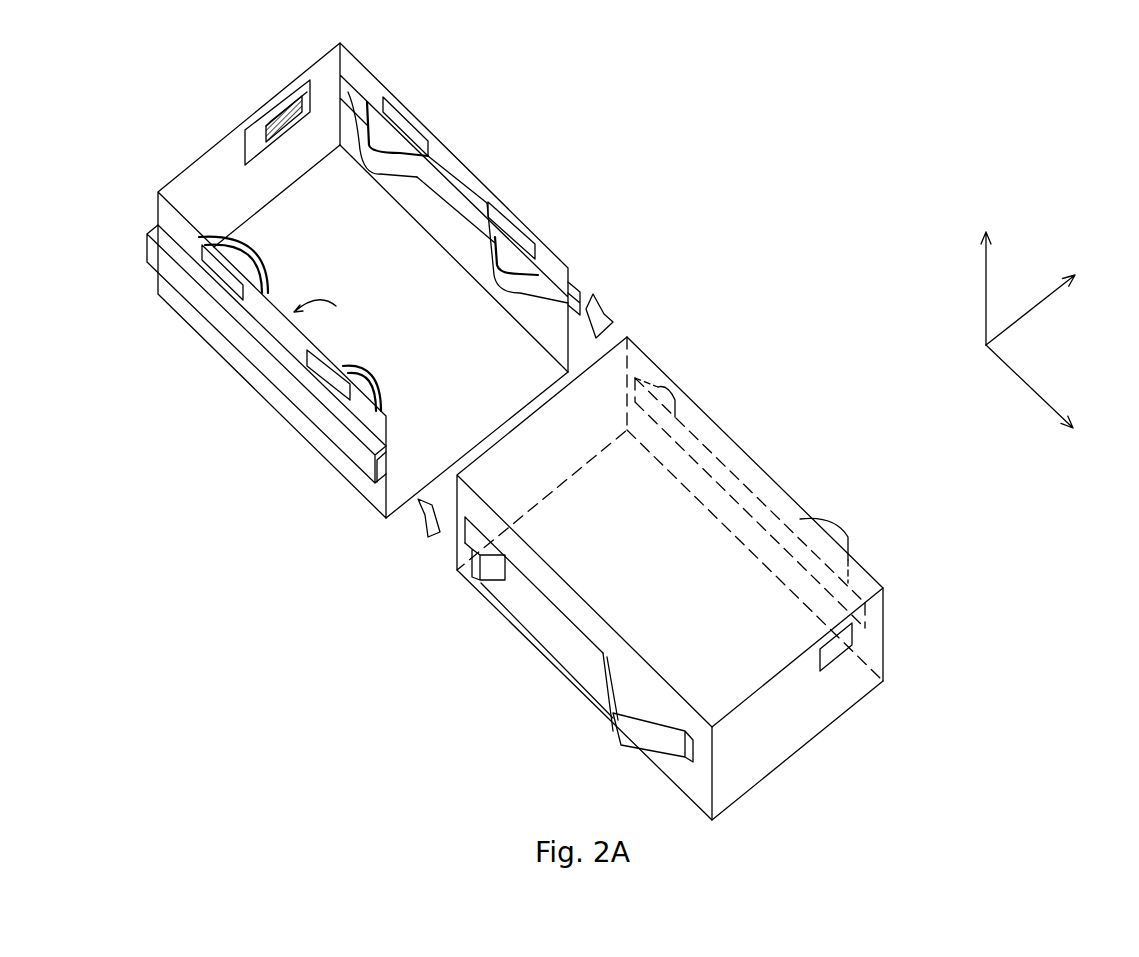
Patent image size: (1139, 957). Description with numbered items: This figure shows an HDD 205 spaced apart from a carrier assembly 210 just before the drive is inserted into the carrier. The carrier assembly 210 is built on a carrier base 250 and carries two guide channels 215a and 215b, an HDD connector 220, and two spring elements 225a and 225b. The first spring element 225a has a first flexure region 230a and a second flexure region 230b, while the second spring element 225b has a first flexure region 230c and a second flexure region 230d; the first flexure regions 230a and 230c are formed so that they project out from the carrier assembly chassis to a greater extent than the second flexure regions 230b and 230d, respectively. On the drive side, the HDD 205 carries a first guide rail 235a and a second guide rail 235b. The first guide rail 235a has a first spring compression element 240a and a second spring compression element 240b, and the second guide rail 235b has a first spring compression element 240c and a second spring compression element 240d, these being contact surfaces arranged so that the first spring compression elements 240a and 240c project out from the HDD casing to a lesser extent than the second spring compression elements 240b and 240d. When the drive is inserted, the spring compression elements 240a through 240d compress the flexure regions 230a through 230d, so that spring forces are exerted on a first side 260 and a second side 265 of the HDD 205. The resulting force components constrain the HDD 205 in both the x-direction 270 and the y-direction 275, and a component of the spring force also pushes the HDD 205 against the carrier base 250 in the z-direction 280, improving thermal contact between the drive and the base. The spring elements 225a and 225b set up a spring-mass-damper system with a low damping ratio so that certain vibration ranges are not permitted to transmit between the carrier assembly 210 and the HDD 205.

The HDD 205 is at (780, 497).
The carrier assembly 210 is at (173, 186).
The guide channel 215a is at (366, 460).
The guide channel 215b is at (575, 295).
The HDD connector 220 is at (258, 125).
The first spring element 225a is at (268, 305).
The second spring element 225b is at (460, 197).
The first flexure region 230a is at (216, 262).
The second flexure region 230b is at (347, 385).
The first flexure region 230c is at (378, 143).
The second flexure region 230d is at (503, 260).
The first guide rail 235a is at (552, 617).
The second guide rail 235b is at (723, 463).
The first spring compression element 240a is at (475, 572).
The second spring compression element 240b is at (613, 740).
The first spring compression element 240c is at (673, 390).
The second spring compression element 240d is at (847, 537).
The carrier base 250 is at (293, 260).
The first side 260 is at (703, 778).
The second side 265 is at (887, 643).
The x-direction 270 is at (1035, 390).
The y-direction 275 is at (1037, 303).
The z-direction 280 is at (987, 287).